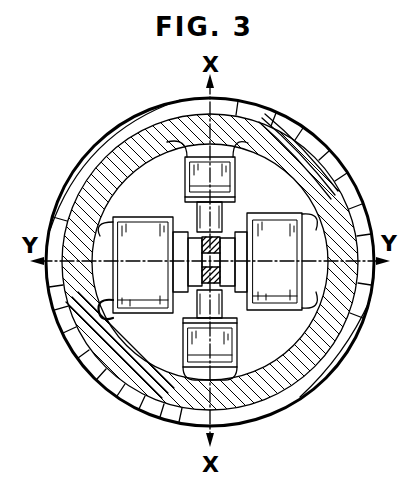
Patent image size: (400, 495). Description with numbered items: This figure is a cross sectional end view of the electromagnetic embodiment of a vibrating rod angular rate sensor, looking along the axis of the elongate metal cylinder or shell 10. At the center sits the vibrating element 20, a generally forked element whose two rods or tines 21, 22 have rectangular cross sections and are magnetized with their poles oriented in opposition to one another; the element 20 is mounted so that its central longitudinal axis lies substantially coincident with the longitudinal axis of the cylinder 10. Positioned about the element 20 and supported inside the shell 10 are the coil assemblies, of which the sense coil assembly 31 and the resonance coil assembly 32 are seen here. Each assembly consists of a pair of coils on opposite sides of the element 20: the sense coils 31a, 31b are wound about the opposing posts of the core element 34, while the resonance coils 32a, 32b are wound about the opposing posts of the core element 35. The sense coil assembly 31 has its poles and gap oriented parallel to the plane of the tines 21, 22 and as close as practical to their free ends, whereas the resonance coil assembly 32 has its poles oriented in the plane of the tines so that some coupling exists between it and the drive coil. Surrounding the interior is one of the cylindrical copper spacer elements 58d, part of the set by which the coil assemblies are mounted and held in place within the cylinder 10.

The metal cylinder or shell 10 is at (310, 130).
The vibrating element 20 is at (226, 234).
The tine 21 is at (200, 243).
The tine 22 is at (200, 277).
The coil assembly 31 is at (104, 320).
The coil 31a is at (313, 211).
The coil 31b is at (136, 222).
The coil assembly 32 is at (176, 337).
The coil 32a is at (250, 147).
The coil 32b is at (223, 357).
The core element 34 is at (346, 193).
The core element 35 is at (186, 150).
The cylindrical copper spacer element 58d is at (148, 407).